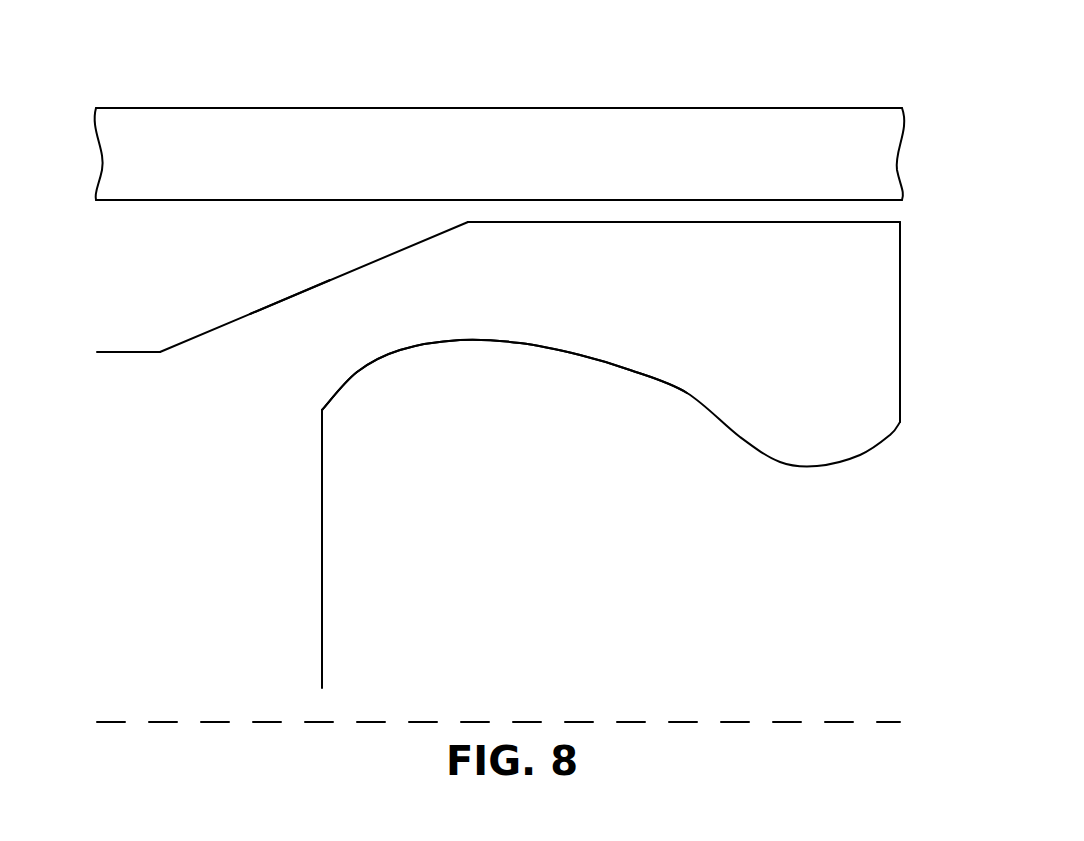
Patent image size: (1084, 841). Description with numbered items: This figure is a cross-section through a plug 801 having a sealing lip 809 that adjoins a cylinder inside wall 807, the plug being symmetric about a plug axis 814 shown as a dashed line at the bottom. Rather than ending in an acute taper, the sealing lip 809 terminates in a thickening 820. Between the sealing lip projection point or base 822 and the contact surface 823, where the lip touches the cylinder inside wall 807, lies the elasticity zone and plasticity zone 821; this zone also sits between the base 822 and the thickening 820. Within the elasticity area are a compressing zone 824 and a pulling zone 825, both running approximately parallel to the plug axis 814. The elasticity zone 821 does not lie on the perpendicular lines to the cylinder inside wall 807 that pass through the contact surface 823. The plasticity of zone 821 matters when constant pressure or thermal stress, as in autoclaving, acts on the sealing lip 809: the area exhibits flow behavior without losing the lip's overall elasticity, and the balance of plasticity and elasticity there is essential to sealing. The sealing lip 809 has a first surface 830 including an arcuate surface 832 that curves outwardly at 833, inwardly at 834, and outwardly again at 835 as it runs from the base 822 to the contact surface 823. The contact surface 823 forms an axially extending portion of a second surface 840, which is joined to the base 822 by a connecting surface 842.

The cylinder inside wall 807 is at (260, 200).
The second surface 840 is at (518, 210).
The contact surface 823 is at (703, 222).
The connecting surface 842 is at (430, 240).
The pulling zone 825 is at (353, 297).
The sealing lip projection point or base 822 is at (255, 387).
The outward curve 833 is at (350, 383).
The compressing zone 824 is at (350, 365).
The elasticity zone and plasticity zone 821 is at (417, 318).
The first surface 830 is at (506, 350).
The sealing lip 809 is at (593, 333).
The arcuate surface 832 is at (633, 367).
The inward curve 834 is at (685, 393).
The second outward curve 835 is at (900, 348).
The thickening 820 is at (823, 432).
The plug 801 is at (267, 637).
The plug axis 814 is at (884, 704).